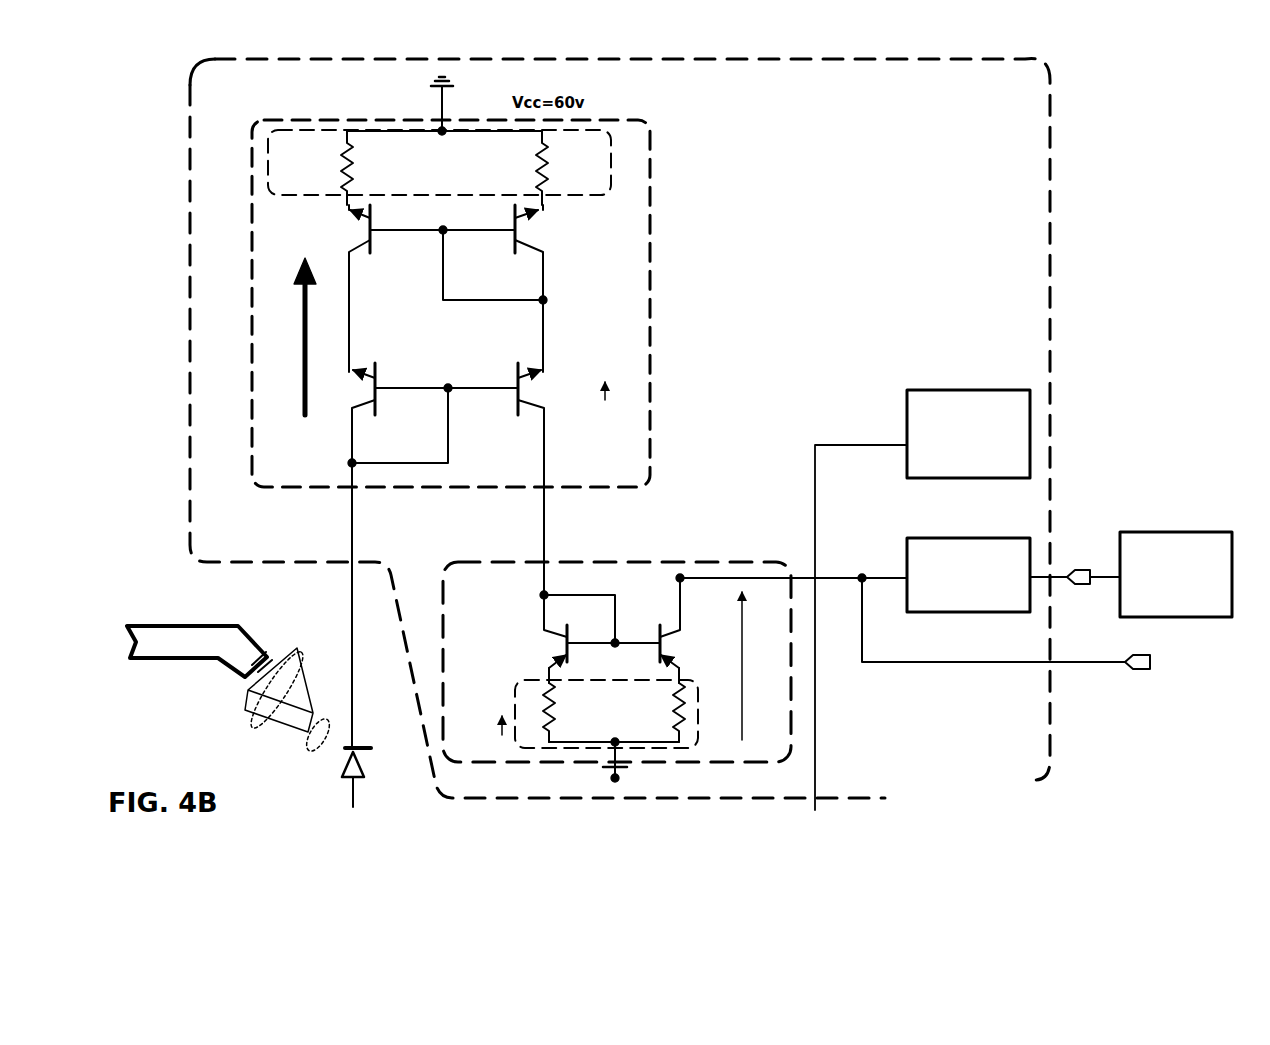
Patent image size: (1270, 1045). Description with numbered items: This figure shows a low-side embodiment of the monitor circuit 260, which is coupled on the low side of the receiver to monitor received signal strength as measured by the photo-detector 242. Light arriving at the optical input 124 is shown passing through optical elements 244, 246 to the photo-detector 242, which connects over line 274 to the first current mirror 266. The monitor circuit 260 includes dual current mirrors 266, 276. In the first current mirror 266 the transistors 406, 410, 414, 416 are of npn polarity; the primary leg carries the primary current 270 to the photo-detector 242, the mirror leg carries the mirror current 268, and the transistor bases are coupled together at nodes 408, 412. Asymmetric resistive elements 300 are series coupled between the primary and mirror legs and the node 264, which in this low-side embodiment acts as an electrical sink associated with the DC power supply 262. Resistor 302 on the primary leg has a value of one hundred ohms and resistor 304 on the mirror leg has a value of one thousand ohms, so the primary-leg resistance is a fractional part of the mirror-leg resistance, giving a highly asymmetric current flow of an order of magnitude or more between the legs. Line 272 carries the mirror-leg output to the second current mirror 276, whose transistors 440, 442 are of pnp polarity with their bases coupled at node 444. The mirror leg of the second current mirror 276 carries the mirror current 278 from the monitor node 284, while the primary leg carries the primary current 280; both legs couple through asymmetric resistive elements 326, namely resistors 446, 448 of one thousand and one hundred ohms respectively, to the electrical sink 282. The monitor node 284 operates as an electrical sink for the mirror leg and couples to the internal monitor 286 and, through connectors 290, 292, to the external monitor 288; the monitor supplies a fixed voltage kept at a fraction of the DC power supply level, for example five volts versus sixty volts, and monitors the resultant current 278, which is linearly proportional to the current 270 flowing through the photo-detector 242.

The optical receiver input connector 124 is at (170, 624).
The photo-detector 242 is at (362, 778).
The lens 244 is at (314, 748).
The lens 246 is at (250, 732).
The monitor circuit 260 is at (1052, 378).
The DC power supply 262 is at (935, 386).
The node 264 is at (430, 84).
The first current mirror 266 is at (652, 300).
The mirror current 268 is at (610, 395).
The primary current 270 is at (302, 335).
The output line 272 is at (548, 505).
The photodiode line 274 is at (351, 572).
The second current mirror 276 is at (728, 765).
The mirror current 278 is at (745, 728).
The primary current 280 is at (498, 732).
The electrical sink 282 is at (610, 780).
The monitor node 284 is at (862, 576).
The internal monitor 286 is at (985, 612).
The external monitor 288 is at (1165, 532).
The connector 290 is at (1092, 550).
The connector 292 is at (1140, 670).
The asymmetric resistive elements 300 is at (583, 195).
The resistor 302 is at (340, 152).
The resistor 304 is at (548, 152).
The asymmetric resistive elements 326 is at (700, 722).
The npn transistor 406 is at (386, 260).
The base node 408 is at (440, 228).
The npn transistor 410 is at (503, 242).
The base node 412 is at (446, 385).
The npn transistor 414 is at (510, 408).
The npn transistor 416 is at (390, 414).
The pnp transistor 440 is at (585, 640).
The pnp transistor 442 is at (652, 640).
The base node 444 is at (612, 647).
The resistor R5 446 is at (555, 708).
The resistor R4 448 is at (678, 713).